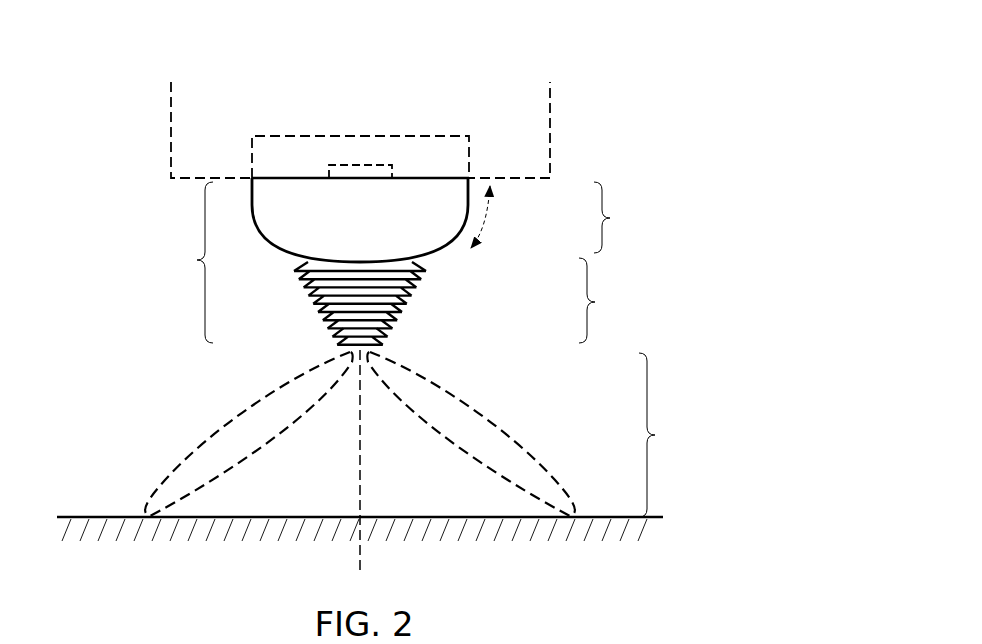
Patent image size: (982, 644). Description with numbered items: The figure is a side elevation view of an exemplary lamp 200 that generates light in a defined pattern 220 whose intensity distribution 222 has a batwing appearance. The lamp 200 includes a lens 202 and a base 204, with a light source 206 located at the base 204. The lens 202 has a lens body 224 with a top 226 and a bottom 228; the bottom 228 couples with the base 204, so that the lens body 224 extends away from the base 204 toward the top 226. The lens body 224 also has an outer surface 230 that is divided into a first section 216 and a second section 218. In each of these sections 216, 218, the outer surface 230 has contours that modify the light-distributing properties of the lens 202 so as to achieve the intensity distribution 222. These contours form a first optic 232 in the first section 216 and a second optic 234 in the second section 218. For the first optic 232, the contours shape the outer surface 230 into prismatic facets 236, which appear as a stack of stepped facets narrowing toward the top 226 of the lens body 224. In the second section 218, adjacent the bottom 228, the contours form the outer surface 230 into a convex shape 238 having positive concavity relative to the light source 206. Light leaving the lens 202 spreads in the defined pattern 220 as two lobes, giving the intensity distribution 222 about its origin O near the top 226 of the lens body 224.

The lamp 200 is at (668, 57).
The lens 202 is at (176, 228).
The base 204 is at (437, 136).
The light source 206 is at (359, 165).
The first section 216 is at (595, 302).
The second section 218 is at (610, 218).
The defined pattern 220 is at (655, 435).
The intensity distribution 222 is at (446, 448).
The lens body 224 is at (197, 260).
The top 226 is at (397, 356).
The bottom 228 is at (523, 194).
The outer surface 230 is at (293, 231).
The first optic 232 is at (425, 309).
The second optic 234 is at (382, 231).
The prismatic facets 236 is at (393, 329).
The convex shape 238 is at (486, 232).
The origin O is at (353, 368).